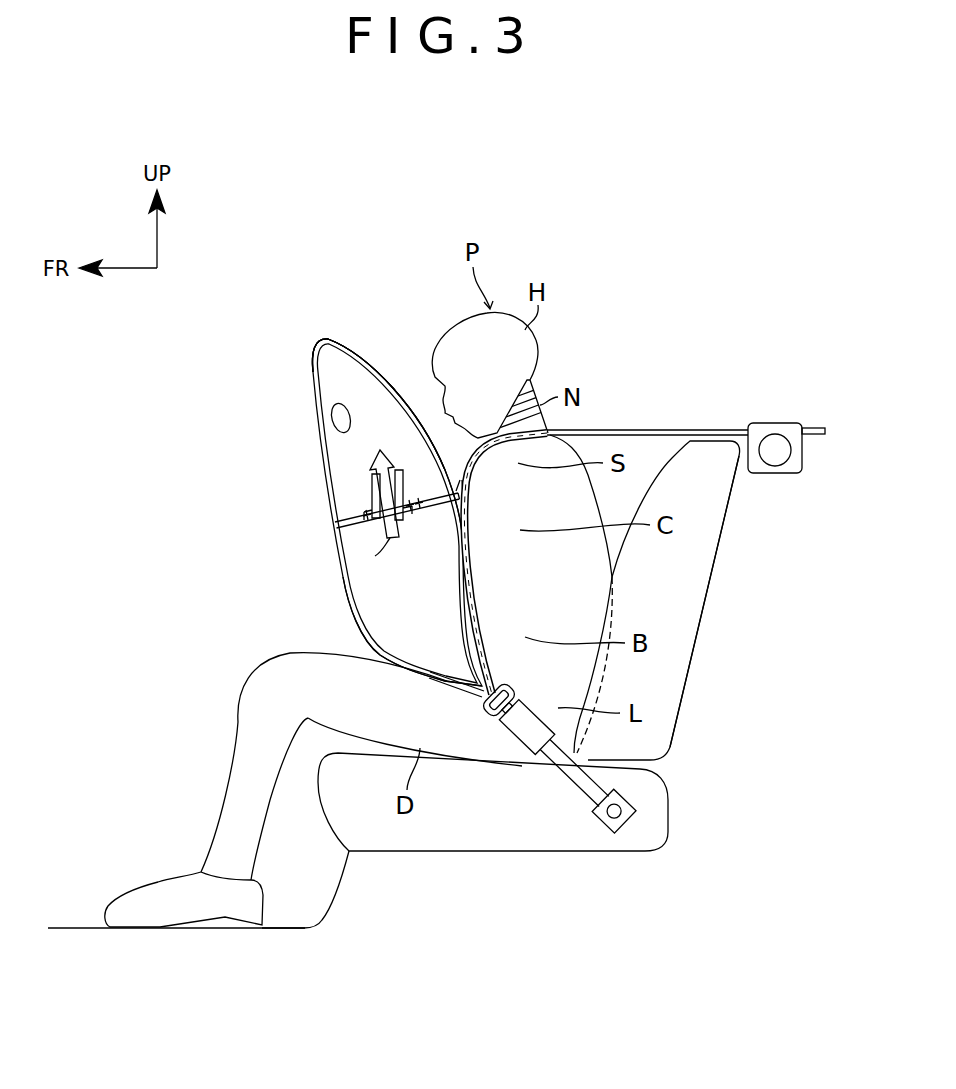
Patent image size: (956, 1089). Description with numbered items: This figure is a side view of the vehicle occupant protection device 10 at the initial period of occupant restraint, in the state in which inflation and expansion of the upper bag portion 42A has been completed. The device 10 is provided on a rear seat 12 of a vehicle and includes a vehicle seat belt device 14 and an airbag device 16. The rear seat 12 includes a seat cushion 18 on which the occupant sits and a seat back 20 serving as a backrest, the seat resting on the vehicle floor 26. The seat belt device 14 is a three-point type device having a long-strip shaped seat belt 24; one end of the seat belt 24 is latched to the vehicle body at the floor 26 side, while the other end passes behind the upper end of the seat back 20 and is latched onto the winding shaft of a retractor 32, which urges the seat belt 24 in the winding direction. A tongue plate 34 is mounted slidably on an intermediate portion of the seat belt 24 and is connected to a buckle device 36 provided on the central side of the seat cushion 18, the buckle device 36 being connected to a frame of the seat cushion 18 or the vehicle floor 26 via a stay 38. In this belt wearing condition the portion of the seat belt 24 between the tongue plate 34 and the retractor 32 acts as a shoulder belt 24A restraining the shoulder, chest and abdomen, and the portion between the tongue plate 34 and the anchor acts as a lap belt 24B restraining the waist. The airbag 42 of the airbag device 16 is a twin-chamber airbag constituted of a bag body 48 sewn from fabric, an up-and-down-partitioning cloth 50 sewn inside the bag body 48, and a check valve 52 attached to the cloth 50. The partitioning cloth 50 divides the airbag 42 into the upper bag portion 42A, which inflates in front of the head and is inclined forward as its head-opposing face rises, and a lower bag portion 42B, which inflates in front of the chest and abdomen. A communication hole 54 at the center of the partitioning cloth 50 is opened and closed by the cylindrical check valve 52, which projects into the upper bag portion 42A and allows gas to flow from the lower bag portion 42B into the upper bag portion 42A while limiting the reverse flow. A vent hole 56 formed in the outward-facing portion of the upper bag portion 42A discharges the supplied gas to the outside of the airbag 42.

The vehicle occupant protection device 10 is at (318, 228).
The rear seat 12 is at (693, 688).
The vehicle seat belt device 14 is at (436, 613).
The airbag device 16 is at (333, 477).
The seat cushion 18 is at (472, 851).
The seat back 20 is at (712, 581).
The seat belt 24 is at (569, 535).
The shoulder belt 24A is at (488, 616).
The lap belt 24B is at (480, 690).
The vehicle floor 26 is at (291, 926).
The retractor 32 is at (777, 422).
The tongue plate 34 is at (476, 728).
The buckle device 36 is at (521, 738).
The stay 38 is at (575, 792).
The airbag 42 is at (354, 477).
The upper bag portion 42A is at (313, 366).
The lower bag portion 42B is at (345, 622).
The bag body 48 is at (350, 343).
The up-and-down-partitioning cloth 50 is at (355, 514).
The check valve 52 is at (372, 490).
The communication hole 54 is at (408, 512).
The vent hole 56 is at (335, 416).